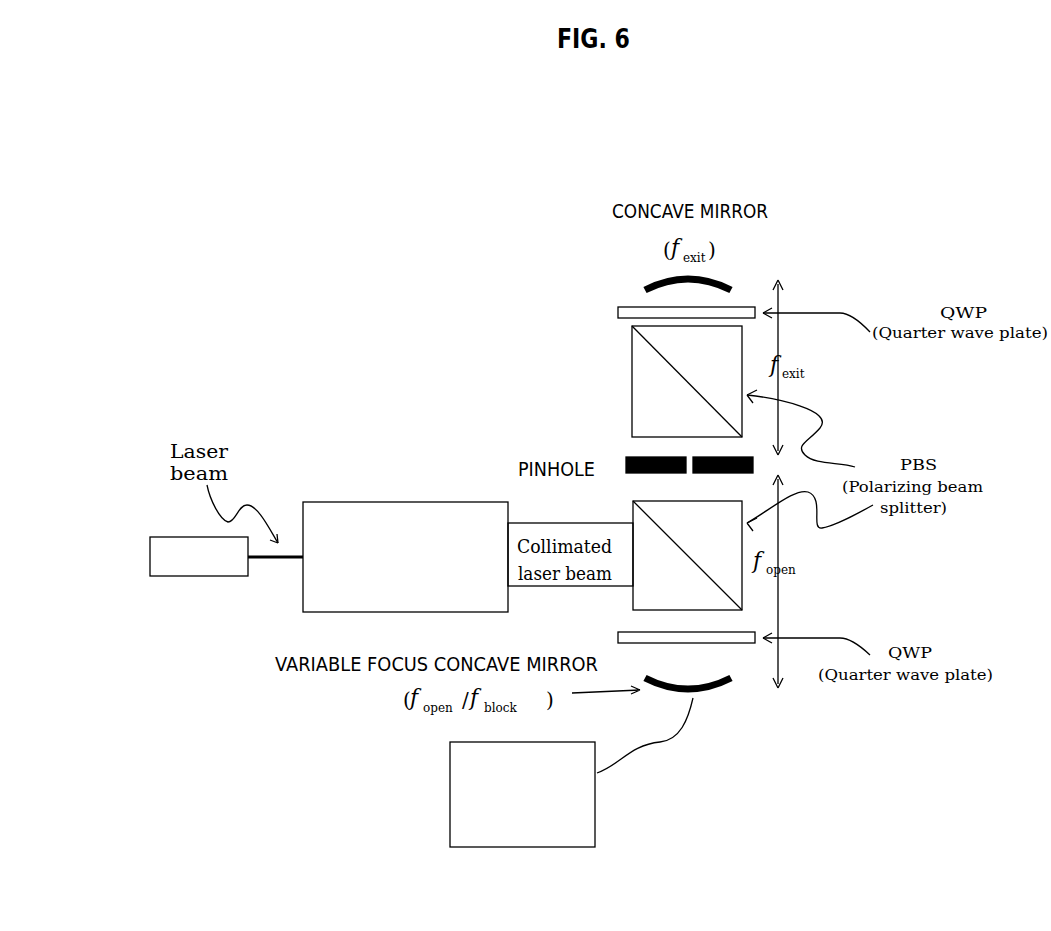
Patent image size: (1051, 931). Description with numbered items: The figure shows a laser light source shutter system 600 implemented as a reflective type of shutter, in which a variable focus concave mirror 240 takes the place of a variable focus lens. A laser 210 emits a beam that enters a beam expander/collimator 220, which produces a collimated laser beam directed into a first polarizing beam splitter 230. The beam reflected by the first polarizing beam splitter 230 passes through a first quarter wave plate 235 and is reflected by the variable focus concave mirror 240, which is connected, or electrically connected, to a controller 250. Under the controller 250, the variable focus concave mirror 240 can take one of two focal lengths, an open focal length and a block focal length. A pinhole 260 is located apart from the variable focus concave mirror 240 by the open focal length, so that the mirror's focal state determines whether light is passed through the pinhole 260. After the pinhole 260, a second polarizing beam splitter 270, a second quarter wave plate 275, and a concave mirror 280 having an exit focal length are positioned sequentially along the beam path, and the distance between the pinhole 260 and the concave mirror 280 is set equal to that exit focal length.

The laser light source shutter system 600 is at (833, 172).
The laser 210 is at (199, 578).
The beam expander/collimator 220 is at (403, 502).
The first polarizing beam splitter 230 is at (633, 503).
The first quarter wave plate 235 is at (621, 633).
The variable focus concave mirror 240 is at (661, 696).
The controller 250 is at (450, 795).
The pinhole 260 is at (633, 455).
The second polarizing beam splitter 270 is at (632, 355).
The second quarter wave plate 275 is at (618, 311).
The concave mirror 280 is at (648, 278).